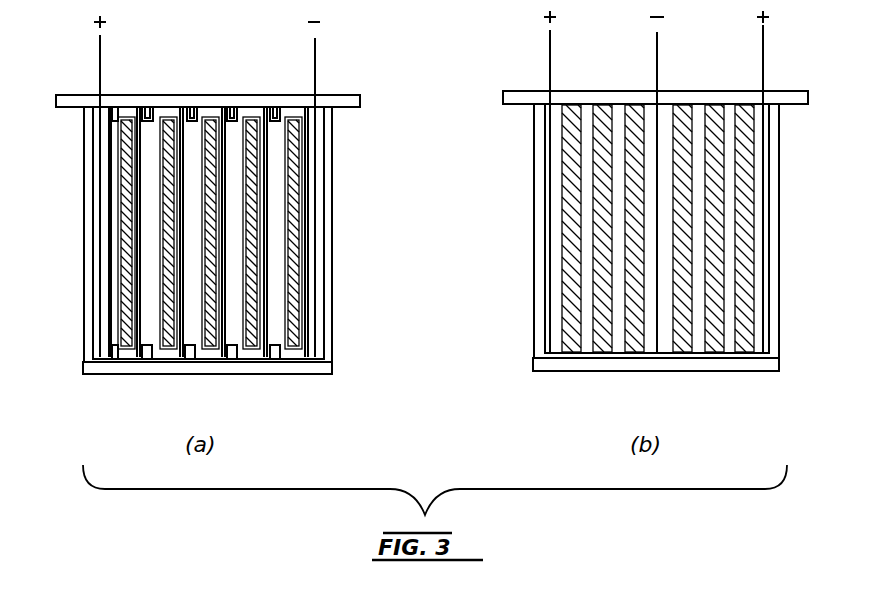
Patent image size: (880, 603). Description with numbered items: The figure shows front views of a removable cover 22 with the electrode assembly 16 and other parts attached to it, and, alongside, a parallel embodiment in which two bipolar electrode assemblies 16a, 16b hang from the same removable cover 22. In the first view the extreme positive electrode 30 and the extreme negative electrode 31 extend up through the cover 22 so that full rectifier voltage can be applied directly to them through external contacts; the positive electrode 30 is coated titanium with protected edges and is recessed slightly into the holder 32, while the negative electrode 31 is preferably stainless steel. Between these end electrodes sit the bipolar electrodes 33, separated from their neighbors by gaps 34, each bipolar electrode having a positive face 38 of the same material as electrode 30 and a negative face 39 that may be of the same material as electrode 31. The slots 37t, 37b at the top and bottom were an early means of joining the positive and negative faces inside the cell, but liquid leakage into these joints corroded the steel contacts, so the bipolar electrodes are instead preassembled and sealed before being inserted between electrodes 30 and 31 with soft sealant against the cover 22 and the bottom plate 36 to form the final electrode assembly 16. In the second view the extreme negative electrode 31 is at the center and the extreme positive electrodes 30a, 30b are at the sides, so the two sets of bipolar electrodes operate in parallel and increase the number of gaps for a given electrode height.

The electrode assembly 16 is at (302, 176).
The bipolar electrode assembly 16a is at (600, 213).
The bipolar electrode assembly 16b is at (718, 220).
The removable cover 22 is at (244, 100).
The extreme positive electrode 30 is at (100, 53).
The extreme positive electrode 30a is at (549, 52).
The extreme positive electrode 30b is at (764, 62).
The extreme negative electrode 31 is at (316, 62).
The holder 32 is at (90, 300).
The bipolar electrodes 33 is at (122, 171).
The gaps 34 is at (148, 218).
The bottom plate 36 is at (277, 371).
The top slot 37t is at (153, 112).
The bottom slot 37b is at (146, 359).
The positive electrode face 38 is at (297, 230).
The negative electrode face 39 is at (288, 295).